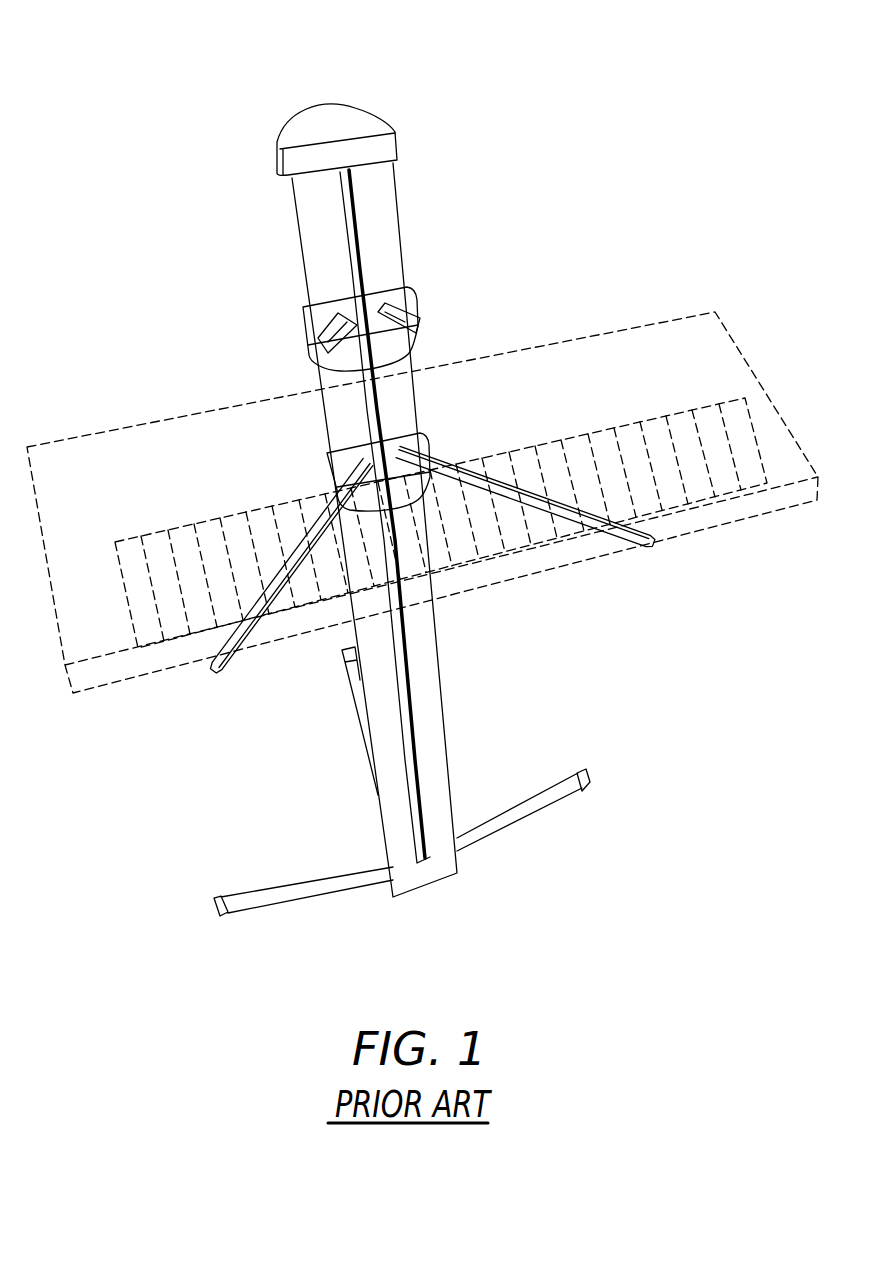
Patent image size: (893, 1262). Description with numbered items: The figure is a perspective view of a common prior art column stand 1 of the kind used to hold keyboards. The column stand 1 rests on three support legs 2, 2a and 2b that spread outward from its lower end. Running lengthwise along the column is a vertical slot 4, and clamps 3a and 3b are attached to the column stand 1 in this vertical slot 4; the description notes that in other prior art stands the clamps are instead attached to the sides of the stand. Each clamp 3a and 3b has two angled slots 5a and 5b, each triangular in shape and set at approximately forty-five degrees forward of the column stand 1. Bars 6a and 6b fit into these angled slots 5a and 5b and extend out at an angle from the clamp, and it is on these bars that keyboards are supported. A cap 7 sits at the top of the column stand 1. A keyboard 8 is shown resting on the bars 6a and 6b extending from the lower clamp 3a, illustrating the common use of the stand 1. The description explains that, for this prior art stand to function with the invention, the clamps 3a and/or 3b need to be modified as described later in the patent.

The column stand 1 is at (442, 694).
The support leg 2 is at (272, 887).
The support leg 2a is at (348, 678).
The support leg 2b is at (542, 793).
The clamp 3a is at (430, 445).
The clamp 3b is at (420, 356).
The vertical slot 4 is at (402, 628).
The angled slot 5a is at (322, 343).
The angled slot 5b is at (418, 322).
The bar 6a is at (234, 660).
The bar 6b is at (647, 558).
The cap 7 is at (358, 118).
The keyboard 8 is at (772, 392).